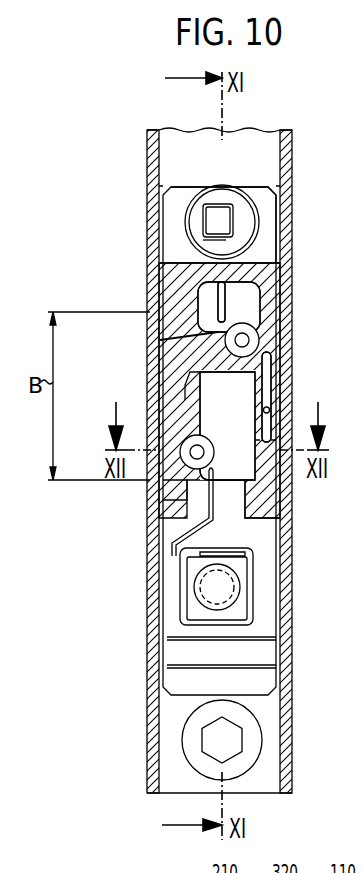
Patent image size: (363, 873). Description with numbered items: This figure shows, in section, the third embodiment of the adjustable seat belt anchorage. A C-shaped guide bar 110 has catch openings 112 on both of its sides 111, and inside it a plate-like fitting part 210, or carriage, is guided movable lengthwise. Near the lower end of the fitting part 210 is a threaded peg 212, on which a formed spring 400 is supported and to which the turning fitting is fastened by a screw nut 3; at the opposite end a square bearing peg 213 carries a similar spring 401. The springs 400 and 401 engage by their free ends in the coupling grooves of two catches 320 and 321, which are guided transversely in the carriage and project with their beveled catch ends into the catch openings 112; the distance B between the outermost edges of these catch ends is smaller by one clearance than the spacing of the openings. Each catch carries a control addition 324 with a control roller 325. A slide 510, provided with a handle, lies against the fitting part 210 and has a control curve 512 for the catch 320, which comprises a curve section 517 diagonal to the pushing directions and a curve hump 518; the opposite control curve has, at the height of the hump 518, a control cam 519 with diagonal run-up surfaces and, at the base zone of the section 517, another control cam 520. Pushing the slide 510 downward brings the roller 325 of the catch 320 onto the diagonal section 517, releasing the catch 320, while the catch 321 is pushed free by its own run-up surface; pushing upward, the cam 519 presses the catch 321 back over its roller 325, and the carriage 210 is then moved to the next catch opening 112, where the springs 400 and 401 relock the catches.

The screw nut 3 is at (256, 748).
The guide bar 110 is at (156, 656).
The sides 111 is at (156, 151).
The catch openings 112 is at (156, 208).
The fitting part 210 is at (263, 616).
The threaded peg 212 is at (225, 586).
The square bearing peg 213 is at (225, 224).
The catch 320 is at (265, 471).
The catch 321 is at (160, 326).
The control additions 324 is at (249, 342).
The control roller 325 is at (253, 334).
The formed spring 400 is at (182, 569).
The spring 401 is at (259, 233).
The slide 510 is at (156, 274).
The control curve 512 is at (206, 504).
The curve section 517 is at (200, 402).
The curve hump 518 is at (212, 334).
The control cam 519 is at (271, 380).
The control cam 520 is at (259, 504).